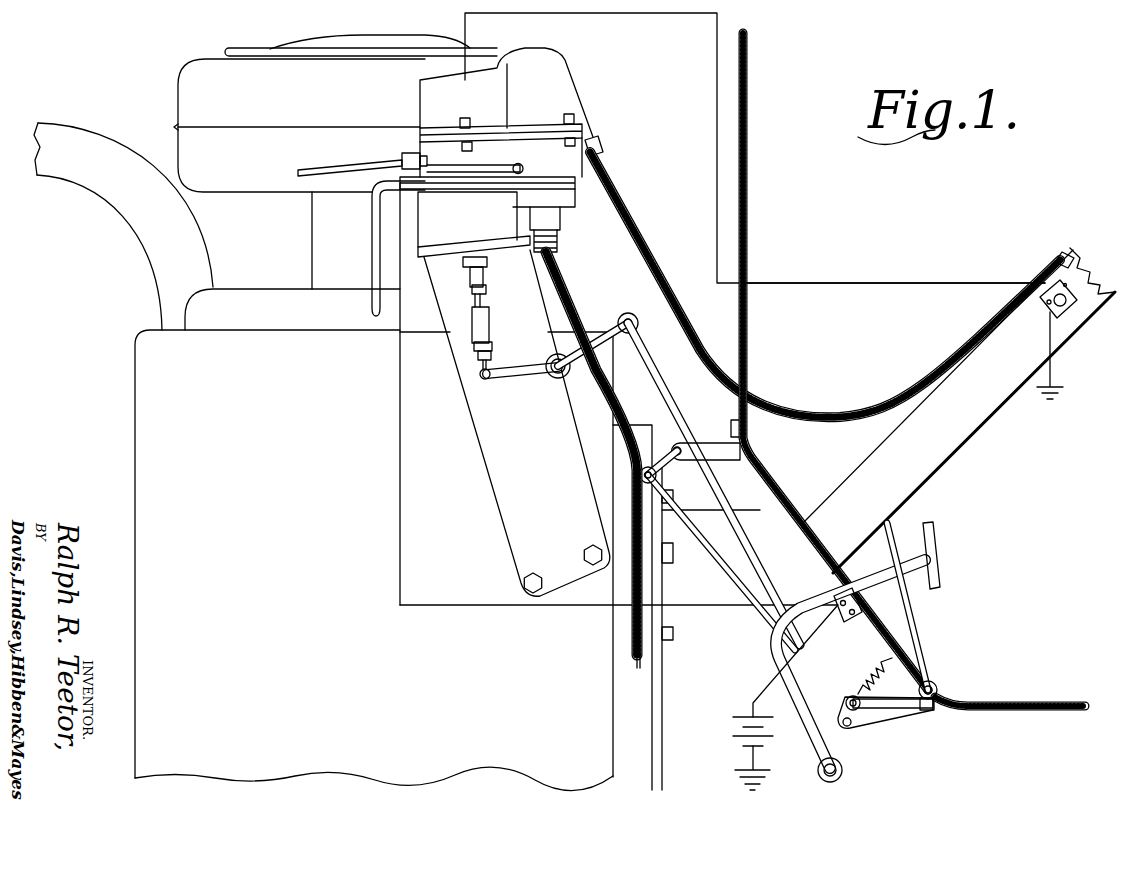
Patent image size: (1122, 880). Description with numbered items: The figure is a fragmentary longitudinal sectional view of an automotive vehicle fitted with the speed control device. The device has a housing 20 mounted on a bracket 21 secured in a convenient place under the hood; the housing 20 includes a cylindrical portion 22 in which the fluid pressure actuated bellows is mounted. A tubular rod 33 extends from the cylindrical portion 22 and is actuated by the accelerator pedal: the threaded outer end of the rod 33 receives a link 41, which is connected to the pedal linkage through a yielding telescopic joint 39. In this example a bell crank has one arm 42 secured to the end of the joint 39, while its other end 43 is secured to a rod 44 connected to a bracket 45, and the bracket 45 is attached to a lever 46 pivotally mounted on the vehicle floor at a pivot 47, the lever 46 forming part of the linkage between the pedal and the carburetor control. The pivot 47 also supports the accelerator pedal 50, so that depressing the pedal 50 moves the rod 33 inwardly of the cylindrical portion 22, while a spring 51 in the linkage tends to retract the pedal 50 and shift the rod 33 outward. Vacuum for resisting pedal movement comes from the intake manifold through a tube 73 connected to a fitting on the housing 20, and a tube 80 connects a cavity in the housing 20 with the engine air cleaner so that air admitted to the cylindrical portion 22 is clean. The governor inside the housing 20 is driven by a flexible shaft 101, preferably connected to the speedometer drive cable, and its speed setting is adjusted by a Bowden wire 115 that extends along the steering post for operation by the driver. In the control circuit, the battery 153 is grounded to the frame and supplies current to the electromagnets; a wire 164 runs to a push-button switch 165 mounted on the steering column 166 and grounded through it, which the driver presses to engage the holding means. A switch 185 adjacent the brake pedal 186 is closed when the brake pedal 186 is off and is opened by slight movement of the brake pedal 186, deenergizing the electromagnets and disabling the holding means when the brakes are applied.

The housing 20 is at (413, 146).
The bracket 21 is at (490, 432).
The cylindrical portion 22 is at (425, 212).
The rod 33 is at (478, 275).
The yielding telescopic joint 39 is at (488, 318).
The link 41 is at (477, 300).
The bell crank arm 42 is at (535, 374).
The bell crank end 43 is at (622, 314).
The rod 44 is at (680, 412).
The bracket 45 is at (873, 716).
The lever 46 is at (927, 710).
The pivot 47 is at (937, 689).
The accelerator pedal 50 is at (915, 636).
The spring 51 is at (866, 676).
The tube 73 is at (323, 170).
The tube 80 is at (373, 255).
The flexible shaft 101 is at (590, 398).
The Bowden wire 115 is at (620, 197).
The battery 153 is at (740, 725).
The wire 164 is at (807, 283).
The push-button switch 165 is at (1073, 302).
The steering column 166 is at (958, 418).
The switch 185 is at (863, 598).
The brake pedal 186 is at (870, 580).